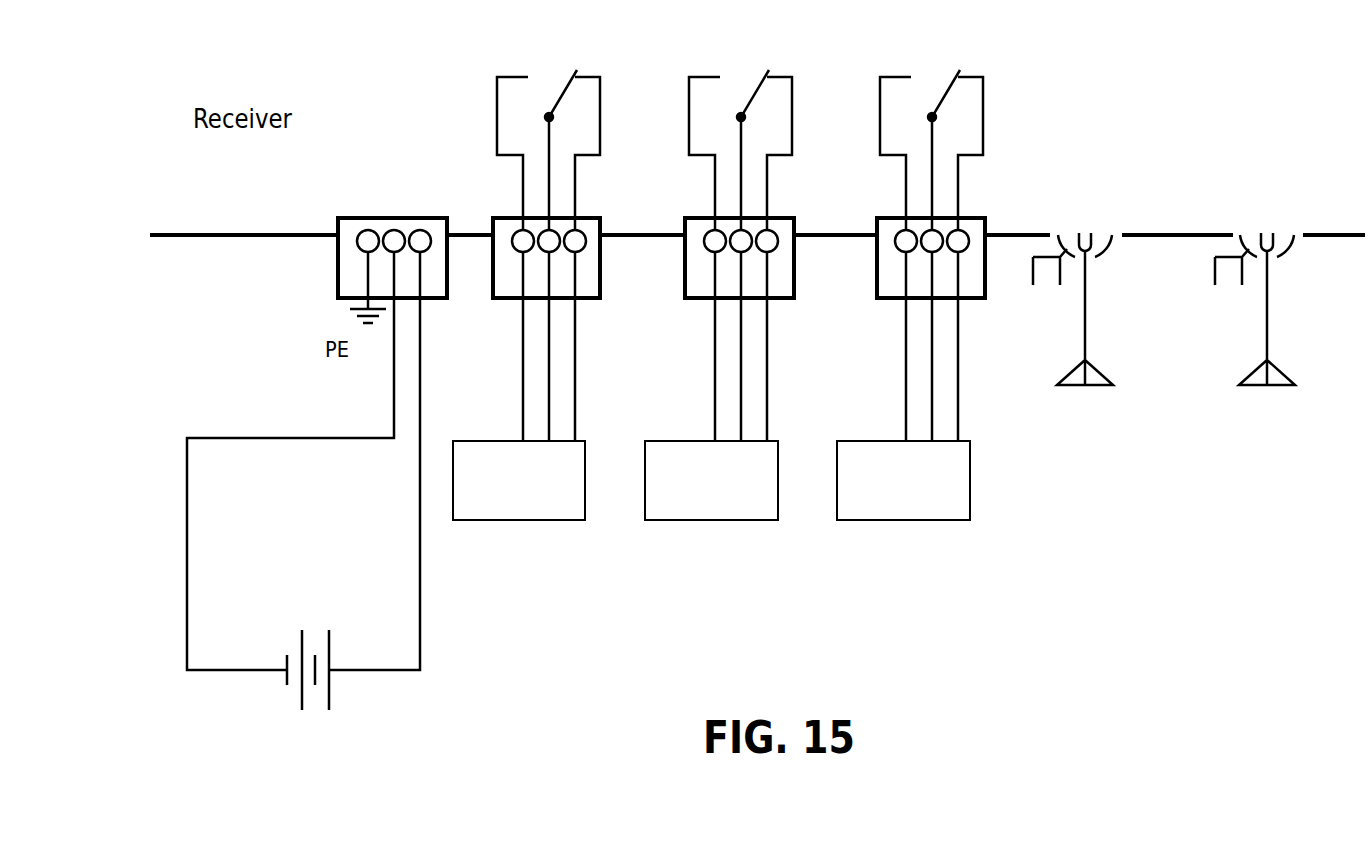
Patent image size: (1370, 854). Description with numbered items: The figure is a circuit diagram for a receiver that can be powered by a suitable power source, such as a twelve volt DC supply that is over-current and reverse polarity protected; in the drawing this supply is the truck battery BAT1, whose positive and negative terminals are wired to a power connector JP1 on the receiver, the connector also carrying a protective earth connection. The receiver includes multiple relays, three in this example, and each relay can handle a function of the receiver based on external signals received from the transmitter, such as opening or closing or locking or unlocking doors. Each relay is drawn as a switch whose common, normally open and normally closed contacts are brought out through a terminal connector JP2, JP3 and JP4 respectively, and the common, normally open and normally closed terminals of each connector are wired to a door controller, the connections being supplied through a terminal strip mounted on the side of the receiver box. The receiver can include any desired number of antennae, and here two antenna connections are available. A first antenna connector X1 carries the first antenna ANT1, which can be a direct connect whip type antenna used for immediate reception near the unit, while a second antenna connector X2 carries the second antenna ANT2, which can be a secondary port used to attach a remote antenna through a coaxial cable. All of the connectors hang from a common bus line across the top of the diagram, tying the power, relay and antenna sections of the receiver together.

The power/ground connector jumper JP1 is at (317, 444).
The relay output connector JP2 to door controller JP2 is at (526, 288).
The relay output connector JP3 to door controller JP3 is at (719, 288).
The relay output connector JP4 to door controller JP4 is at (911, 288).
The antenna connector X1 is at (1087, 223).
The antenna connector X2 is at (1269, 223).
The antenna 1 ANT1 is at (1082, 336).
The antenna 2 ANT2 is at (1266, 336).
The +12V truck battery BAT1 is at (292, 672).